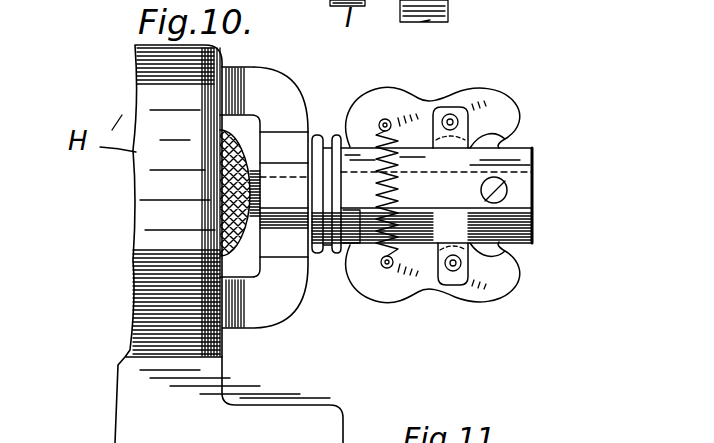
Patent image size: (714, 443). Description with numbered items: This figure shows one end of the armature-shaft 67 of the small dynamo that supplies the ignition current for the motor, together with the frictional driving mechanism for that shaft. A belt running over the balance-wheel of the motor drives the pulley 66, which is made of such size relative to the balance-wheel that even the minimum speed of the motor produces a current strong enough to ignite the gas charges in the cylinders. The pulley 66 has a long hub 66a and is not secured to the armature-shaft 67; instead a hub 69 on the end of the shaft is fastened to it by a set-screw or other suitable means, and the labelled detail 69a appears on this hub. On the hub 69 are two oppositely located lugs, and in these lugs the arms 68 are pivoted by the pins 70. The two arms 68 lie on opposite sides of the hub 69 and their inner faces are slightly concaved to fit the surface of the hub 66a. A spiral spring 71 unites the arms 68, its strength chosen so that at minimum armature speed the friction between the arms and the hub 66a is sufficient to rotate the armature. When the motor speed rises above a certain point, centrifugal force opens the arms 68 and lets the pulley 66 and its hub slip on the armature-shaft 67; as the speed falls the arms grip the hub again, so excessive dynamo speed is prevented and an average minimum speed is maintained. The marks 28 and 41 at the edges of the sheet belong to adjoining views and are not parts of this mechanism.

The pulley 66 is at (320, 133).
The hub 66a is at (353, 217).
The armature-shaft 67 is at (535, 183).
The arms 68 is at (407, 97).
The hub 69 is at (510, 155).
The screw 69a is at (462, 152).
The pins 70 is at (448, 122).
The spiral spring 71 is at (380, 96).
The fragment of adjacent figure 28 is at (448, 13).
The fragment of adjacent figure 41 is at (368, 432).